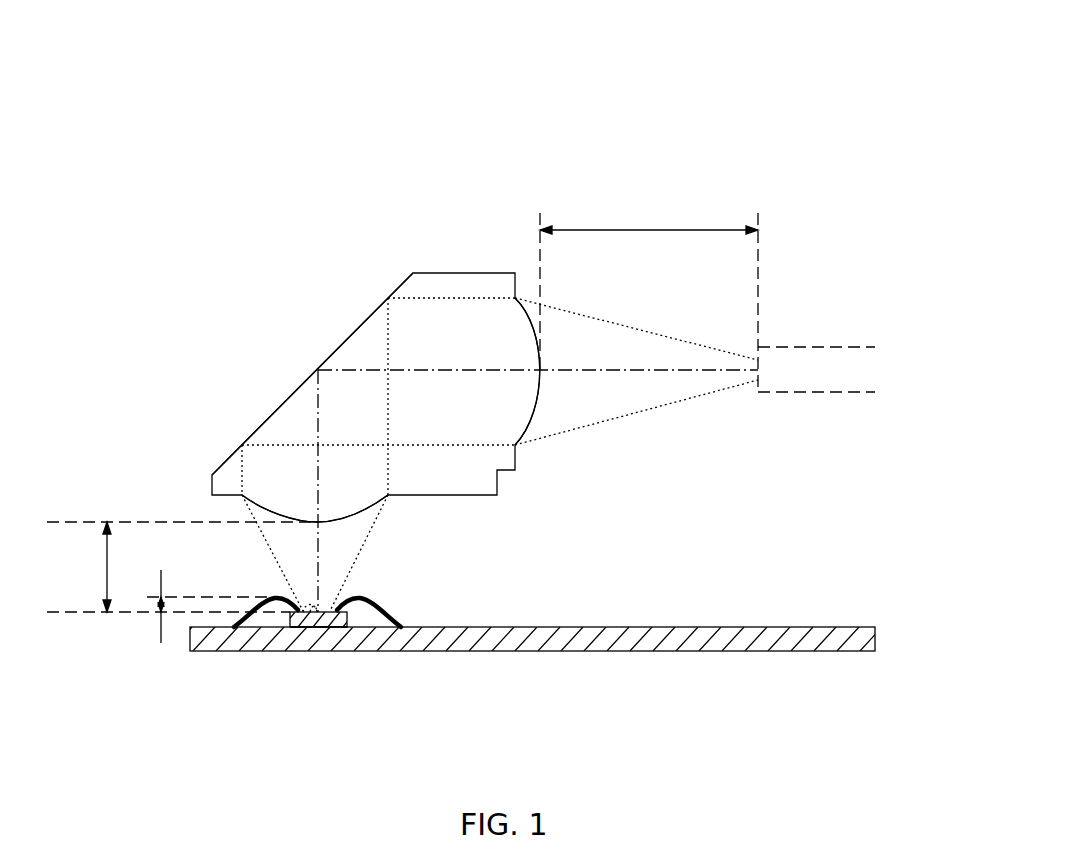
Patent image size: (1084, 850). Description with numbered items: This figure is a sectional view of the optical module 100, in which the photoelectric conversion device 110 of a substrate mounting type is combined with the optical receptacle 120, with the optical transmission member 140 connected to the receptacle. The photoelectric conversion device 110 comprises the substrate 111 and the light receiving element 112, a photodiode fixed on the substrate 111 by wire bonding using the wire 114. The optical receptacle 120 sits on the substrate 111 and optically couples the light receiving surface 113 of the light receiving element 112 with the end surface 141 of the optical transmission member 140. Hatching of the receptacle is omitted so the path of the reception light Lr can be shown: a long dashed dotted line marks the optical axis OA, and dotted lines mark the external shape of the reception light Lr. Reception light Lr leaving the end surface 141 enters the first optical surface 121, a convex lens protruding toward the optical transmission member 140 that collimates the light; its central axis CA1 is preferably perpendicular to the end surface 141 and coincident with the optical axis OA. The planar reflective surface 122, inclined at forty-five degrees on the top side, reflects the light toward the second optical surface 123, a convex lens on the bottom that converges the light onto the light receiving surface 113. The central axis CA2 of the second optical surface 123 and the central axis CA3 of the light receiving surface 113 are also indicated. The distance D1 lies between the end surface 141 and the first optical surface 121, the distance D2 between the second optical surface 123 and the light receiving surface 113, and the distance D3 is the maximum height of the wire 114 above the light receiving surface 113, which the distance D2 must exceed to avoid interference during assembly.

The optical module 100 is at (678, 79).
The photoelectric conversion device 110 is at (526, 681).
The substrate 111 is at (378, 642).
The light receiving element 112 is at (322, 623).
The light receiving surface 113 is at (292, 627).
The wire 114 is at (403, 622).
The optical receptacle 120 is at (290, 422).
The first optical surface 121 is at (529, 422).
The reflective surface 122 is at (400, 285).
The second optical surface 123 is at (373, 502).
The optical transmission member 140 is at (837, 393).
The end surface 141 is at (757, 392).
The optical axis OA is at (360, 368).
The reception light Lr is at (462, 365).
The central axis of first optical surface CA1 is at (545, 368).
The central axis of second optical surface CA2 is at (318, 562).
The central axis of light receiving surface CA3 is at (313, 609).
The distance D1 is at (649, 297).
The distance D2 is at (182, 567).
The distance D3 is at (152, 603).